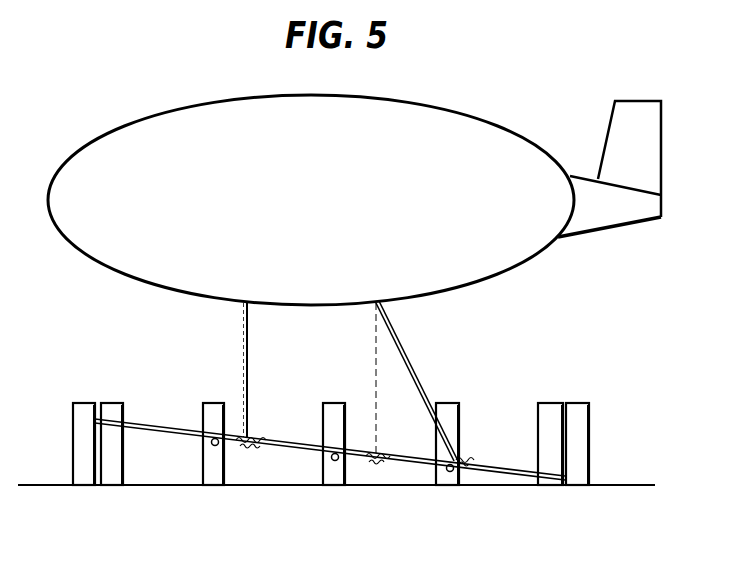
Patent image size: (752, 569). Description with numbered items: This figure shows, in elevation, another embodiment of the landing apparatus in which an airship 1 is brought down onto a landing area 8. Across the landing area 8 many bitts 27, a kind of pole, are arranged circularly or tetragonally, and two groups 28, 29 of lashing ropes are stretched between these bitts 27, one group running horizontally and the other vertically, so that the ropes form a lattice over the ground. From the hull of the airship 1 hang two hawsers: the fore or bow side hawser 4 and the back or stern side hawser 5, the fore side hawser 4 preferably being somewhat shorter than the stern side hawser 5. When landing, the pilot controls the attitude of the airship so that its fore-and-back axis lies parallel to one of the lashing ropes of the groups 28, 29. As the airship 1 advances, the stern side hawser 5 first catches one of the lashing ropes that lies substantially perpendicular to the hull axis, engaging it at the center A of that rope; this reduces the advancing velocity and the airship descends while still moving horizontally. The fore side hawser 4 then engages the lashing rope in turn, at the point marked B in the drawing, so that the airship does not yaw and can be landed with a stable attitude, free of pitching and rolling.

The airship 1 is at (427, 125).
The fore side hawser 4 is at (243, 338).
The back side hawser 5 is at (413, 370).
The landing area 8 is at (610, 486).
The bitts 27 is at (82, 418).
The group of lashing ropes 28 is at (208, 437).
The group of lashing ropes 29 is at (485, 465).
The center of the lashing rope A is at (476, 455).
The front coupling point B is at (250, 433).